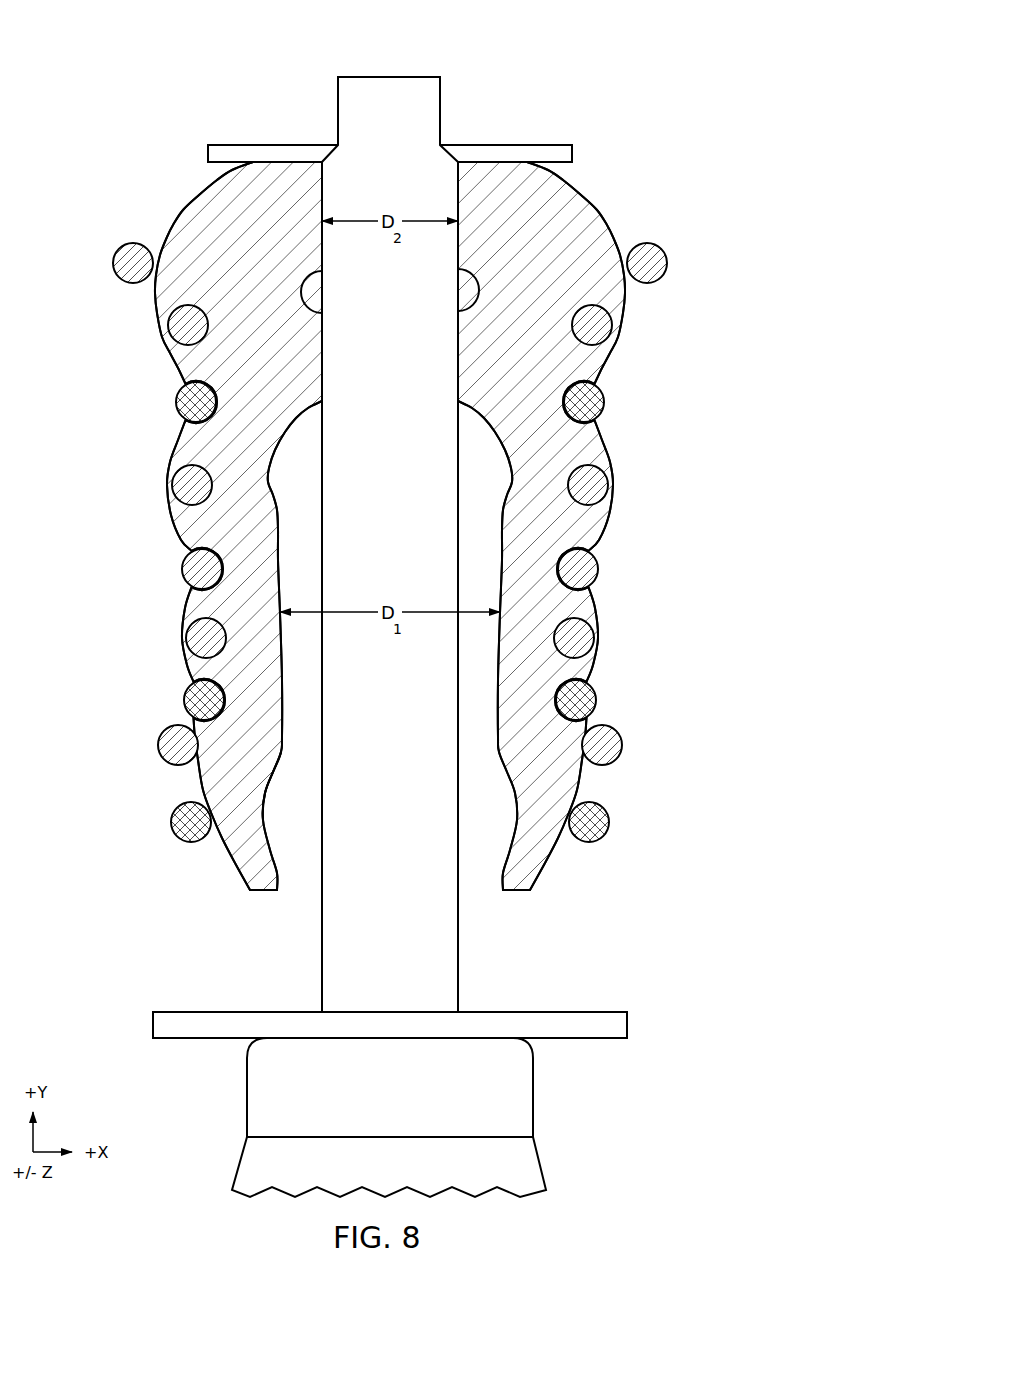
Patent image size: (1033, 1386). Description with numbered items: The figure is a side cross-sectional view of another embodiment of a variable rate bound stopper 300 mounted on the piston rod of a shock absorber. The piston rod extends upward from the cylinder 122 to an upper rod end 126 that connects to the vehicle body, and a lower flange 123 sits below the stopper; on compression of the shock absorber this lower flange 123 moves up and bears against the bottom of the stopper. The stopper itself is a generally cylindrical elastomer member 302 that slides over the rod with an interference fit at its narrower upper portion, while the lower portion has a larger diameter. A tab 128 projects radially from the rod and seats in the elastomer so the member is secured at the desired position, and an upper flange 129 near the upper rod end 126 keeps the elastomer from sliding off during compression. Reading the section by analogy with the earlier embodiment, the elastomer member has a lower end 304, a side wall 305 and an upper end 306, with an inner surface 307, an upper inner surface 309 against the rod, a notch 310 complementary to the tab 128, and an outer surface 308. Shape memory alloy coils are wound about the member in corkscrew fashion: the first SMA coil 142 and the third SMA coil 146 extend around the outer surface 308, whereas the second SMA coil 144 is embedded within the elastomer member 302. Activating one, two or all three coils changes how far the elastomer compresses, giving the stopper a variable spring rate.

The cylinder 122 is at (543, 1167).
The lower flange 123 is at (627, 1025).
The upper rod end 126 is at (440, 97).
The tab 128 is at (458, 292).
The upper flange 129 is at (241, 145).
The first SMA coil 142 is at (668, 262).
The second SMA coil 144 is at (613, 325).
The third SMA coil 146 is at (604, 402).
The variable rate bound stopper 300 is at (656, 176).
The elastomer member 302 is at (195, 188).
The lower end 304 is at (516, 889).
The sealing portion 305 is at (215, 452).
The retaining ring 306 is at (518, 162).
The lip 307 is at (274, 765).
The outer surface 308 is at (175, 528).
The inner surface 309 is at (322, 180).
The recess 310 is at (480, 290).